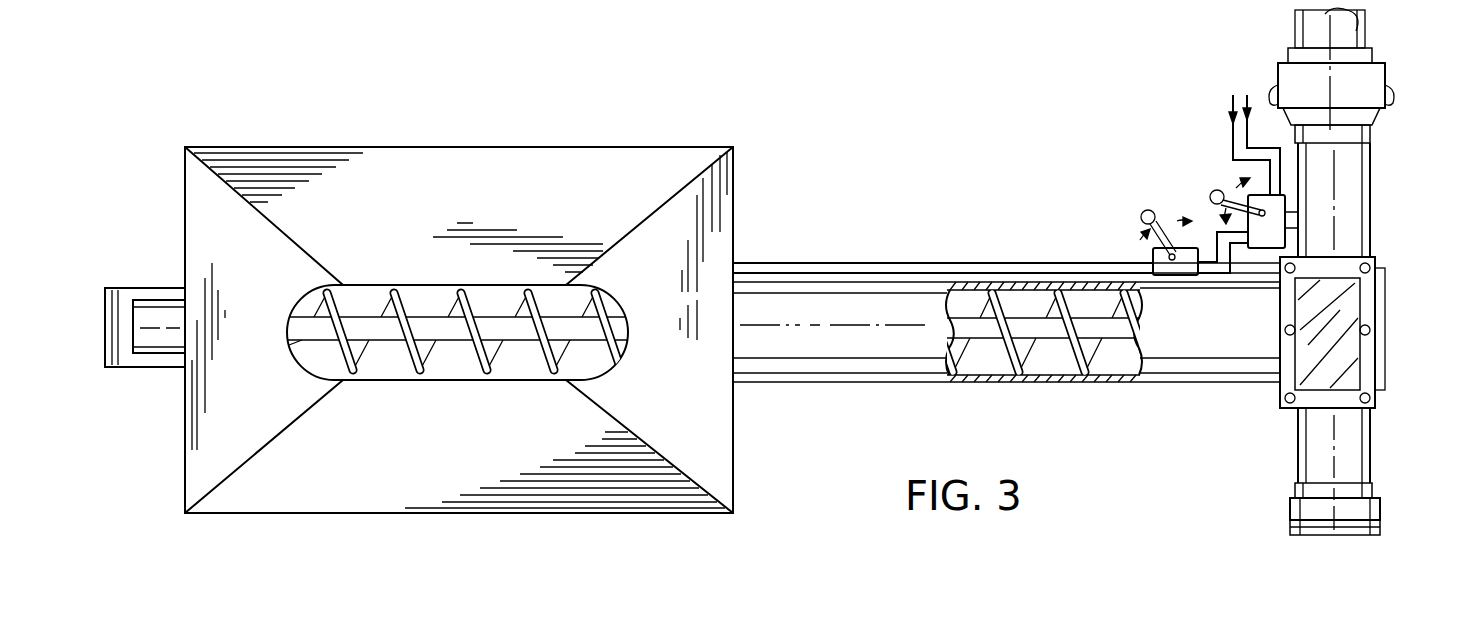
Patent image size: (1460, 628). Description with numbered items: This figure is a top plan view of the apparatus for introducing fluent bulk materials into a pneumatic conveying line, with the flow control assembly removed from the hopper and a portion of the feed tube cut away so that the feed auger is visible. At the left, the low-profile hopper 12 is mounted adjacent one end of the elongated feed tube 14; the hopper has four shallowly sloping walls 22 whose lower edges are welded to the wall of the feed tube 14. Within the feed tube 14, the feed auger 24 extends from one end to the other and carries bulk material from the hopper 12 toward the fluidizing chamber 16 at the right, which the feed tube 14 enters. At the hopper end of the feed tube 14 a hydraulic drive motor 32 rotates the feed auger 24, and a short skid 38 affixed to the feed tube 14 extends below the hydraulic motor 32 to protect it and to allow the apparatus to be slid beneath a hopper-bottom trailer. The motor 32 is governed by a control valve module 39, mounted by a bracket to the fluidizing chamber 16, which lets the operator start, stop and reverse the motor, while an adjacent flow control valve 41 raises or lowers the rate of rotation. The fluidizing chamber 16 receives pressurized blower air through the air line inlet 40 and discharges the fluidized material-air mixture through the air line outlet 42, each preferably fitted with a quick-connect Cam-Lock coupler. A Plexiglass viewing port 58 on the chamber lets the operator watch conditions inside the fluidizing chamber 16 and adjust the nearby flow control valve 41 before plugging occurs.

The hopper 12 is at (480, 143).
The hopper walls 22 is at (577, 162).
The feed auger 24 is at (398, 290).
The hydraulic drive motor 32 is at (155, 290).
The skid 38 is at (135, 368).
The feed tube 14 is at (838, 382).
The control valve module 39 is at (1153, 252).
The flow control valve 41 is at (1268, 197).
The fluidizing chamber 16 is at (1394, 317).
The viewing port 58 is at (1345, 350).
The air line outlet 42 is at (1385, 68).
The air line inlet 40 is at (1380, 512).